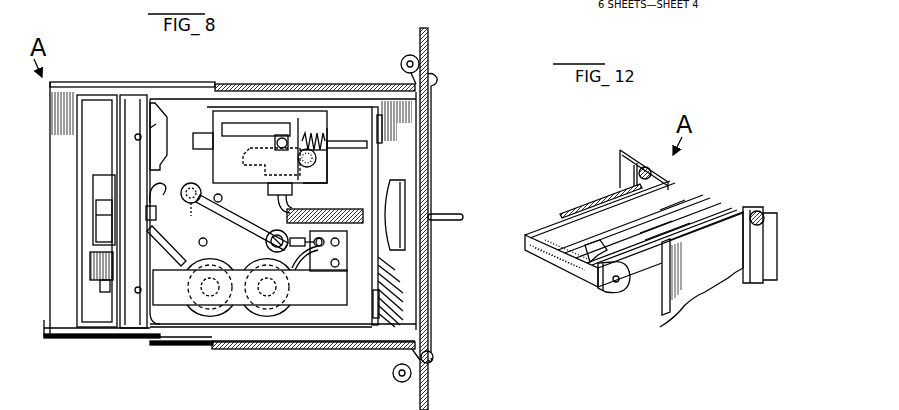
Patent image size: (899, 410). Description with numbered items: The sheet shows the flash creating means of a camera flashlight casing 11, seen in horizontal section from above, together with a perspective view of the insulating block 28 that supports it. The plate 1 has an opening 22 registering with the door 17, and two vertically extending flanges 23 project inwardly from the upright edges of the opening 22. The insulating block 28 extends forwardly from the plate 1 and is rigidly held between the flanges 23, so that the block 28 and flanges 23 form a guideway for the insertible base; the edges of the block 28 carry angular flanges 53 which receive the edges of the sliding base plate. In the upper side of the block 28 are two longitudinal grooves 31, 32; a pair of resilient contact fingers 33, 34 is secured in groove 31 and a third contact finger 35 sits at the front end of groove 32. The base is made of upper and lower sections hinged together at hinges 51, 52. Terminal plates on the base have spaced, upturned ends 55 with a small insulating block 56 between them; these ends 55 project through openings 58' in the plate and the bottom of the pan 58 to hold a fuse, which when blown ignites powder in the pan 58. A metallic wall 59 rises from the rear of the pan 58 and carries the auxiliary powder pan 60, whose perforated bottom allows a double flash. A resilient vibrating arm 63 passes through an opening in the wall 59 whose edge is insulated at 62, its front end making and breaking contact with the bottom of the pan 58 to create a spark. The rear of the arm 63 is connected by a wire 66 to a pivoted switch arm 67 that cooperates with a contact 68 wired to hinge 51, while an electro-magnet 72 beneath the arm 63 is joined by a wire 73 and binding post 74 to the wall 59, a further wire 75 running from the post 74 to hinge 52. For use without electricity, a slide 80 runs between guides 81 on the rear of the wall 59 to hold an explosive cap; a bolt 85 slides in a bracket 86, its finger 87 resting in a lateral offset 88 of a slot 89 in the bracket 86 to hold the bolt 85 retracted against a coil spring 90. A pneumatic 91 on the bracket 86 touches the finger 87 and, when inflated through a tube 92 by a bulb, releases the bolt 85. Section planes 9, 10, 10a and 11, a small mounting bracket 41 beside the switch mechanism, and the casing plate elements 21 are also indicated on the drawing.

In FIG. 8, the plate 1 is at (430, 70).
In FIG. 8, the section line 9 is at (177, 147).
In FIG. 8, the section line 10 is at (280, 100).
In FIG. 8, the section line 10a is at (103, 84).
In FIG. 8, the casing 11 is at (103, 136).
In FIG. 8, the door 17 is at (425, 110).
In FIG. 8, the casing plate 21 is at (241, 373).
In FIG. 8, the opening 22 is at (440, 80).
In FIG. 12, the opening 22 is at (600, 200).
In FIG. 8, the vertically extending flanges 23 is at (289, 83).
In FIG. 8, the insulating block 28 is at (398, 268).
In FIG. 12, the insulating block 28 is at (556, 263).
In FIG. 12, the groove 31 is at (677, 197).
In FIG. 12, the groove 32 is at (710, 202).
In FIG. 12, the resilient contact finger 33 is at (563, 237).
In FIG. 12, the resilient contact finger 34 is at (622, 210).
In FIG. 12, the contact finger 35 is at (597, 253).
In FIG. 8, the bracket 41 is at (312, 268).
In FIG. 8, the hinge 51 is at (384, 128).
In FIG. 8, the hinge 52 is at (390, 306).
In FIG. 8, the angular flanges 53 is at (66, 76).
In FIG. 12, the angular flanges 53 is at (530, 230).
In FIG. 8, the upturned ends 55 is at (95, 180).
In FIG. 8, the small block 56 is at (100, 215).
In FIG. 8, the pan 58 is at (58, 271).
In FIG. 8, the openings 58' is at (57, 299).
In FIG. 8, the metallic wall 59 is at (75, 166).
In FIG. 8, the auxiliary powder pan 60 is at (126, 96).
In FIG. 8, the insulation 62 is at (148, 338).
In FIG. 8, the resilient vibrating arm 63 is at (323, 349).
In FIG. 8, the wire 66 is at (326, 210).
In FIG. 8, the switch arm 67 is at (241, 222).
In FIG. 8, the contact 68 is at (206, 220).
In FIG. 8, the electro-magnet 72 is at (218, 268).
In FIG. 8, the wire 73 is at (163, 246).
In FIG. 8, the binding post 74 is at (194, 180).
In FIG. 8, the wire 75 is at (162, 187).
In FIG. 8, the slide 80 is at (156, 130).
In FIG. 8, the guides 81 is at (160, 103).
In FIG. 8, the bolt 85 is at (352, 141).
In FIG. 8, the bracket 86 is at (323, 150).
In FIG. 8, the finger 87 is at (286, 138).
In FIG. 8, the lateral offset 88 is at (312, 138).
In FIG. 8, the slot 89 is at (245, 125).
In FIG. 8, the coil spring 90 is at (318, 148).
In FIG. 8, the pneumatic 91 is at (318, 160).
In FIG. 8, the tube 92 is at (348, 210).